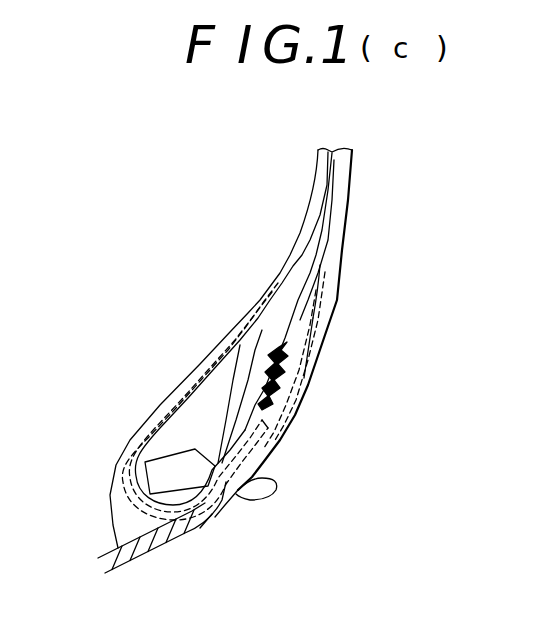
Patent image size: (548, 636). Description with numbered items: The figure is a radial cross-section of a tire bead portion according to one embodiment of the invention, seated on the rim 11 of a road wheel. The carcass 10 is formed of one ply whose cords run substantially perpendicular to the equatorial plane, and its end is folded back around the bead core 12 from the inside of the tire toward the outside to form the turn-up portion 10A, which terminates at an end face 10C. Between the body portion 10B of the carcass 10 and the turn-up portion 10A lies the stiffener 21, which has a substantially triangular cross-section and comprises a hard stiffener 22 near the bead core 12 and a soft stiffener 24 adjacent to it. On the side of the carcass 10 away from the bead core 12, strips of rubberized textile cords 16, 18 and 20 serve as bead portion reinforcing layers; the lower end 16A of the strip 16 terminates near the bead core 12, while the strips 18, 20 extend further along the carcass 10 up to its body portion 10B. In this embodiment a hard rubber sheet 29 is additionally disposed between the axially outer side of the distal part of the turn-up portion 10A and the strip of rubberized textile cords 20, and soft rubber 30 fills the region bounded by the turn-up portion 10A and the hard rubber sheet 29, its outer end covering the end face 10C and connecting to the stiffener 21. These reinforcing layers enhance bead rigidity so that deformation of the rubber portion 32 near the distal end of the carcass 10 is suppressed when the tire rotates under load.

The carcass 10 is at (293, 266).
The turn-up portion 10A is at (277, 432).
The body portion 10B is at (180, 407).
The end face 10C is at (304, 378).
The rim 11 is at (177, 533).
The bead core 12 is at (222, 507).
The strip of rubberized textile cords 16 is at (320, 290).
The lower end 16A is at (276, 490).
The strip of rubberized textile cords 18 is at (313, 327).
The strip of rubberized textile cords 20 is at (300, 358).
The stiffener 21 is at (313, 258).
The hard stiffener 22 is at (168, 443).
The soft stiffener 24 is at (258, 328).
The hard rubber sheet 29 is at (286, 400).
The soft rubber 30 is at (300, 322).
The rubber portion 32 is at (324, 255).